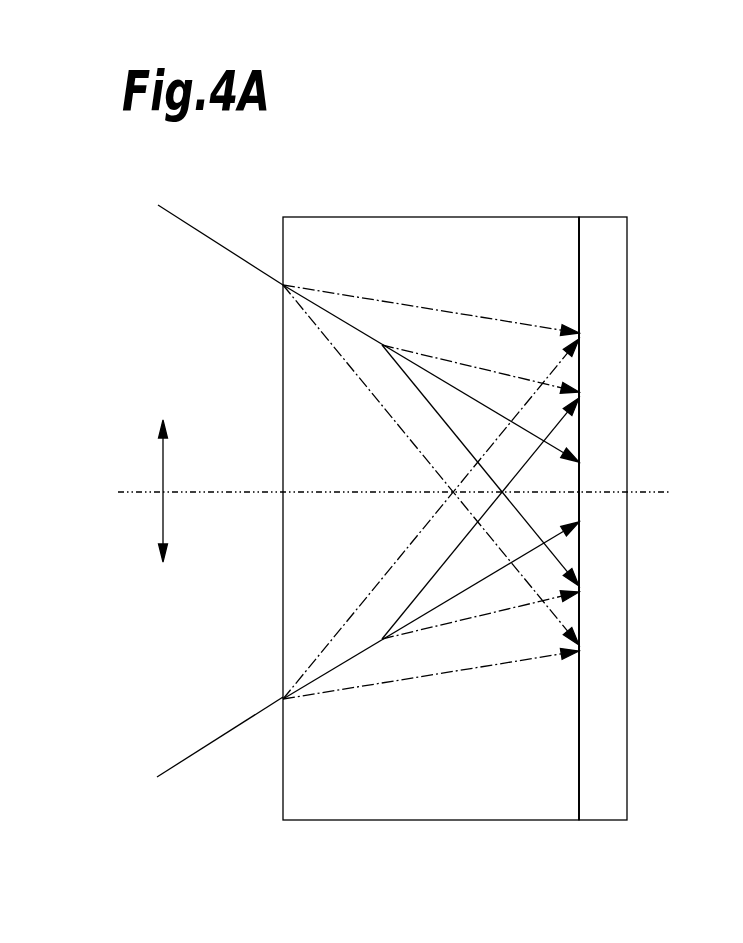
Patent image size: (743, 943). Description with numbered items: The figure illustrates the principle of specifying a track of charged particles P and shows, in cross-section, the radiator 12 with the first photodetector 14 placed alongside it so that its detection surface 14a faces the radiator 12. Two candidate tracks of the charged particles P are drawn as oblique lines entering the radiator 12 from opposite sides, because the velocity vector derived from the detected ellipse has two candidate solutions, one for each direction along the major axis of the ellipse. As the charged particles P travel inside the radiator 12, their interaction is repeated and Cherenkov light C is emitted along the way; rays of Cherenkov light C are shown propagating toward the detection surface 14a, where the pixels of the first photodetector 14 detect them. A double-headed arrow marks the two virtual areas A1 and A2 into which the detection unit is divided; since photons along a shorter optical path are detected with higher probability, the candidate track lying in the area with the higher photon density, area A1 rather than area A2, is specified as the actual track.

The radiator 12 is at (417, 237).
The first photodetector 14 is at (607, 238).
The detection surface 14a is at (580, 272).
The Cherenkov light C is at (510, 376).
The charged particles P is at (217, 243).
The area A1 is at (163, 545).
The area A2 is at (161, 441).